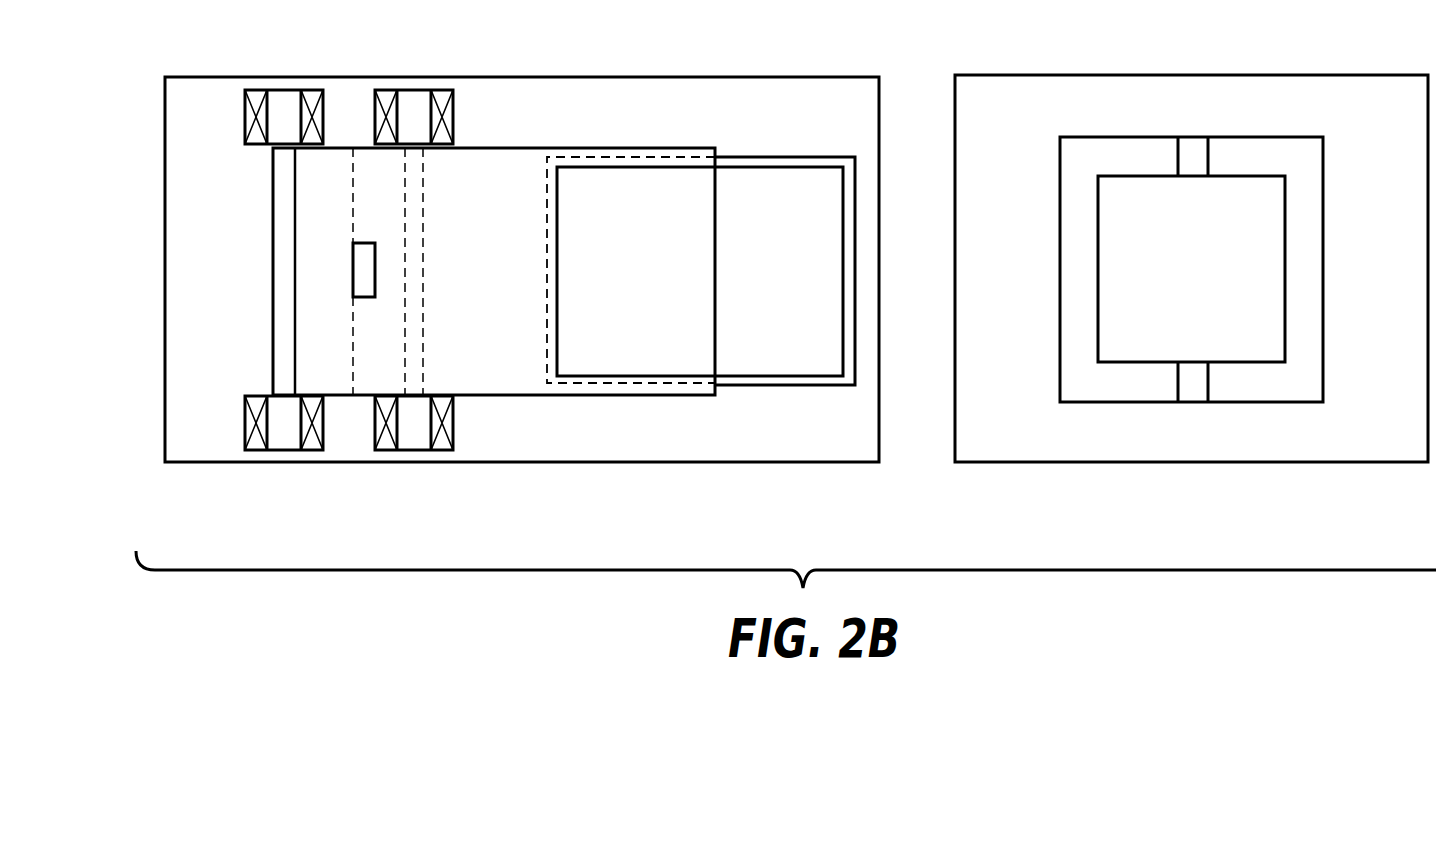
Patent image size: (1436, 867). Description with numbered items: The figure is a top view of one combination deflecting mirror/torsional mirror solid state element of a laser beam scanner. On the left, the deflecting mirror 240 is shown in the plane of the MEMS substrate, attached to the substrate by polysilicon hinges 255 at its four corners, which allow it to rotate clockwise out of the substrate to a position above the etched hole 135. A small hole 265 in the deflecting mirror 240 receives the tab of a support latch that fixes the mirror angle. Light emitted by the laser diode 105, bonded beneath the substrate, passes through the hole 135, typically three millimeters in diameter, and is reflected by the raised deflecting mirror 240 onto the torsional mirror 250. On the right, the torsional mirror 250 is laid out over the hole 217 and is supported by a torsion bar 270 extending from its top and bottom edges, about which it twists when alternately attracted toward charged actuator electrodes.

The laser diode 105 is at (768, 188).
The hole 135 is at (778, 385).
The hole 217 is at (1305, 268).
The deflecting mirror 240 is at (547, 395).
The torsional mirror 250 is at (1147, 244).
The polysilicon hinge 255 is at (413, 104).
The hole 265 is at (362, 271).
The torsion bar 270 is at (1190, 393).